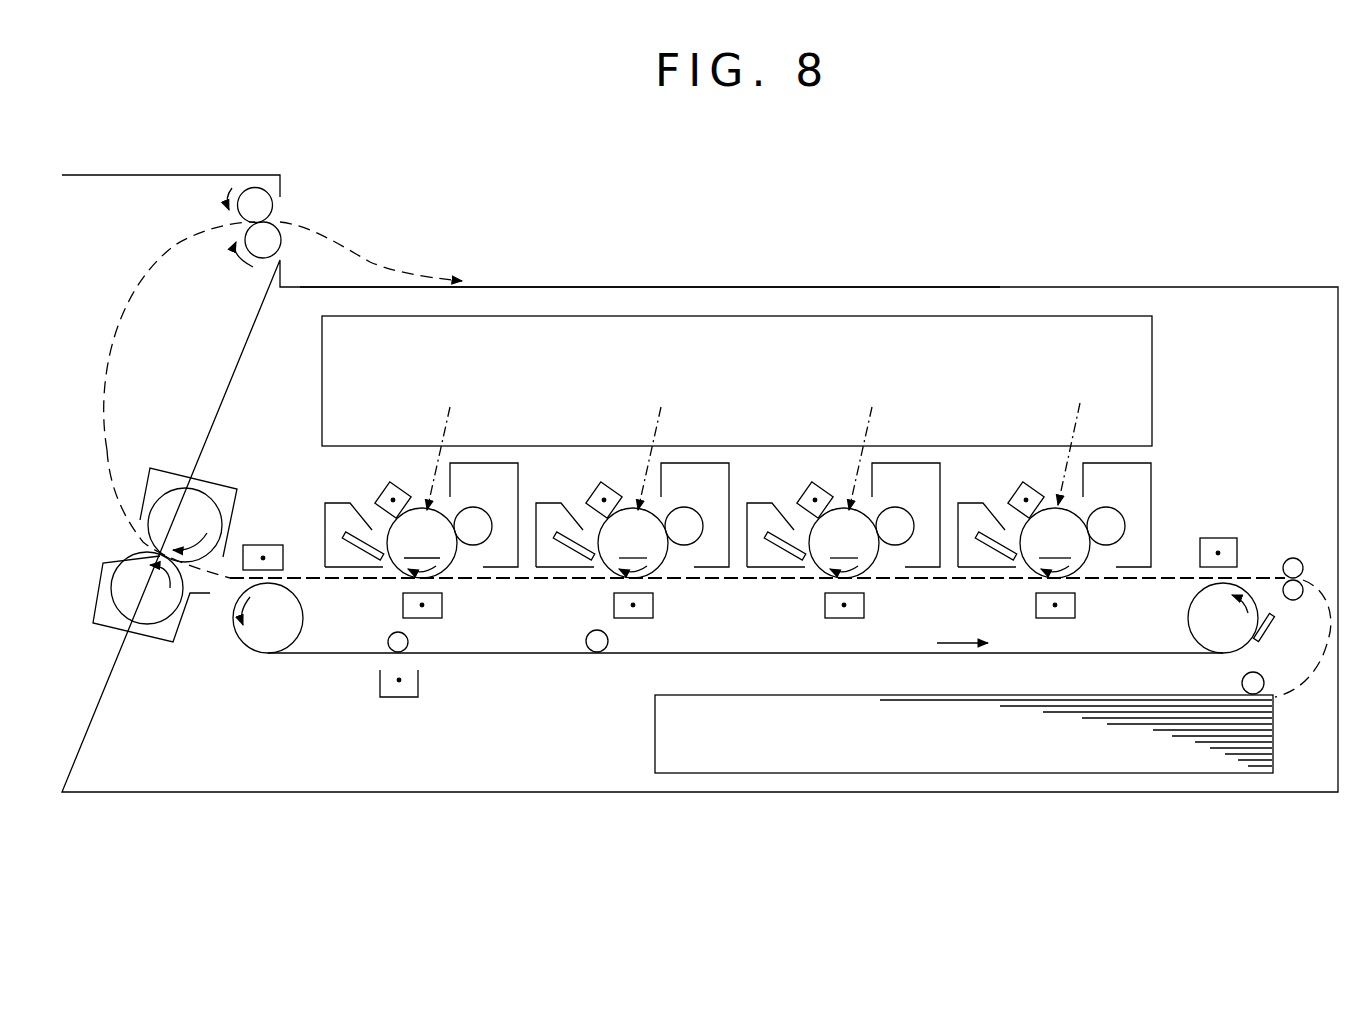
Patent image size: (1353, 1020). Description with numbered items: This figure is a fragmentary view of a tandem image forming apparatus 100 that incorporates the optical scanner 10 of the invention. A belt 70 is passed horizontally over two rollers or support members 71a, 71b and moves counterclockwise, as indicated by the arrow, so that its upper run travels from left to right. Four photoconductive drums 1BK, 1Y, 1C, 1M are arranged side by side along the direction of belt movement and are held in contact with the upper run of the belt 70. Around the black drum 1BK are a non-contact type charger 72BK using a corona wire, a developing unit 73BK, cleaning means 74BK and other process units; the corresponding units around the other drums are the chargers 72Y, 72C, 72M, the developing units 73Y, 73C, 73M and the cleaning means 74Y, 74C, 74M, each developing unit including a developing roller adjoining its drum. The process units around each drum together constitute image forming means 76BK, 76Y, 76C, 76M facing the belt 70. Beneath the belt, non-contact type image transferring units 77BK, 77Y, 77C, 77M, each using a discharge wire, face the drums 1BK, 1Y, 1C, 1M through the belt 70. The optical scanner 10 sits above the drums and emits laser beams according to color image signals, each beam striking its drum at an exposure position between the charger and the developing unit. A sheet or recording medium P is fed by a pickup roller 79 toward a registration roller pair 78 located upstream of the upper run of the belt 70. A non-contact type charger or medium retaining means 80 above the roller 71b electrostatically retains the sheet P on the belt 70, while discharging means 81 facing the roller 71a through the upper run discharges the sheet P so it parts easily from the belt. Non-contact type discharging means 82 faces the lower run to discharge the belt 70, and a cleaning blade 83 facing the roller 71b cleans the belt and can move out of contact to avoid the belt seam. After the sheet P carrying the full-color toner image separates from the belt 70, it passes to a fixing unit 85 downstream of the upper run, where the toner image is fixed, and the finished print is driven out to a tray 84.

The tandem image forming apparatus 100 is at (1198, 263).
The optical scanner 10 is at (1152, 367).
The tray 84 is at (673, 287).
The fixing unit 85 is at (233, 478).
The belt 70 is at (560, 655).
The roller 71a is at (303, 612).
The roller 71b is at (1188, 615).
The discharging means 81 is at (254, 545).
The non-contact type charger 80 is at (1217, 538).
The non-contact type discharging means 82 is at (395, 697).
The registration roller pair 78 is at (1293, 548).
The pickup roller 79 is at (1240, 680).
The cleaning blade 83 is at (1274, 618).
The sheet P is at (1052, 695).
The photoconductive drum 1BK is at (422, 543).
The photoconductive drum 1Y is at (633, 543).
The photoconductive drum 1C is at (844, 543).
The photoconductive drum 1M is at (1055, 543).
The developing unit 73BK is at (500, 463).
The developing unit 73Y is at (697, 490).
The developing unit 73C is at (913, 488).
The developing unit 73M is at (1117, 490).
The cleaning means 74BK is at (333, 505).
The cleaning means 74Y is at (560, 510).
The cleaning means 74C is at (773, 511).
The cleaning means 74M is at (982, 511).
The non-contact type charger 72BK is at (382, 488).
The non-contact type charger 72Y is at (615, 465).
The non-contact type charger 72C is at (810, 466).
The non-contact type charger 72M is at (1017, 465).
The image forming means 76BK is at (474, 400).
The image forming means 76Y is at (707, 365).
The image forming means 76M is at (924, 364).
The image forming means 76C is at (1115, 366).
The non-contact type image transferring unit 77BK is at (442, 605).
The non-contact type image transferring unit 77Y is at (668, 605).
The non-contact type image transferring unit 77C is at (811, 604).
The non-contact type image transferring unit 77M is at (1021, 604).